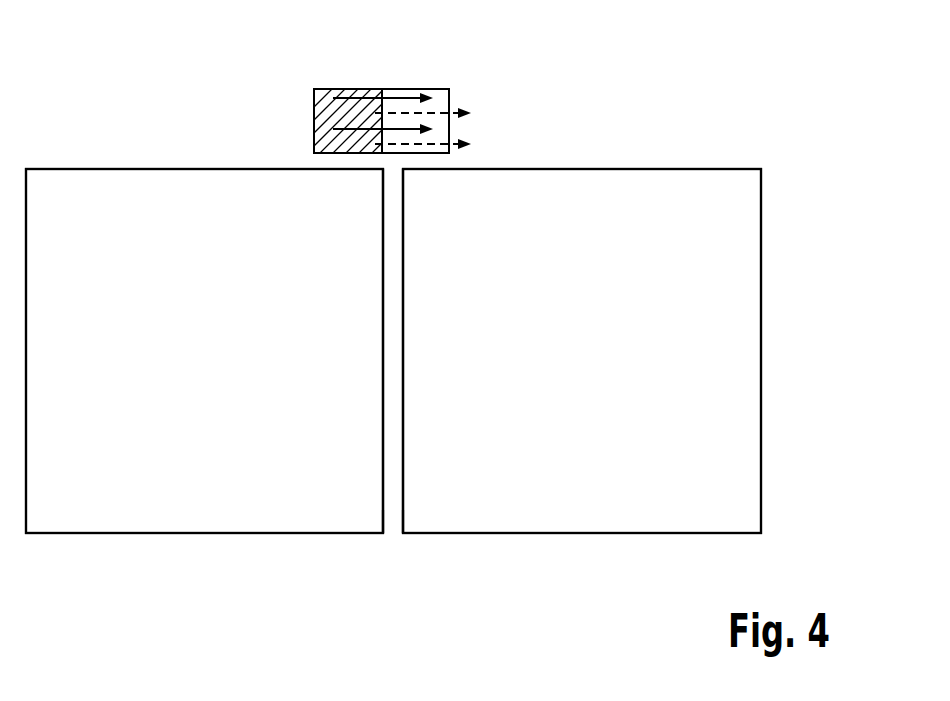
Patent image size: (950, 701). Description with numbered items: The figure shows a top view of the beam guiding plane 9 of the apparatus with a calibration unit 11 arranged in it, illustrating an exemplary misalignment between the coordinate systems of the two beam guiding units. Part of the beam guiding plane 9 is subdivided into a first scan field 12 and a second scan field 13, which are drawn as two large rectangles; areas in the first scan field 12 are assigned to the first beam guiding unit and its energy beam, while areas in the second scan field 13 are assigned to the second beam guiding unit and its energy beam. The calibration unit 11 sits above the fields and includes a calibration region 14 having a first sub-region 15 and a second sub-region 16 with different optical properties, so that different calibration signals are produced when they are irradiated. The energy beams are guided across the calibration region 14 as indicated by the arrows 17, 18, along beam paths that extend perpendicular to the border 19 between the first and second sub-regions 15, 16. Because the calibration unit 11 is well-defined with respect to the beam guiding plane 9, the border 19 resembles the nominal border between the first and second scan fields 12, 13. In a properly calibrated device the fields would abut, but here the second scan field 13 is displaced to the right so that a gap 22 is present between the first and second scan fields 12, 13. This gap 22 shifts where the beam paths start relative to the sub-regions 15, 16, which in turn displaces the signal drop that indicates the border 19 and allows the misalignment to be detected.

The beam guiding plane 9 is at (822, 506).
The calibration unit 11 is at (296, 116).
The first scan field 12 is at (168, 391).
The second scan field 13 is at (566, 391).
The calibration region 14 is at (420, 168).
The first sub-region 15 is at (323, 154).
The second sub-region 16 is at (445, 154).
The arrow 17 is at (352, 96).
The arrow 18 is at (396, 113).
The border 19 is at (383, 315).
The gap 22 is at (394, 513).